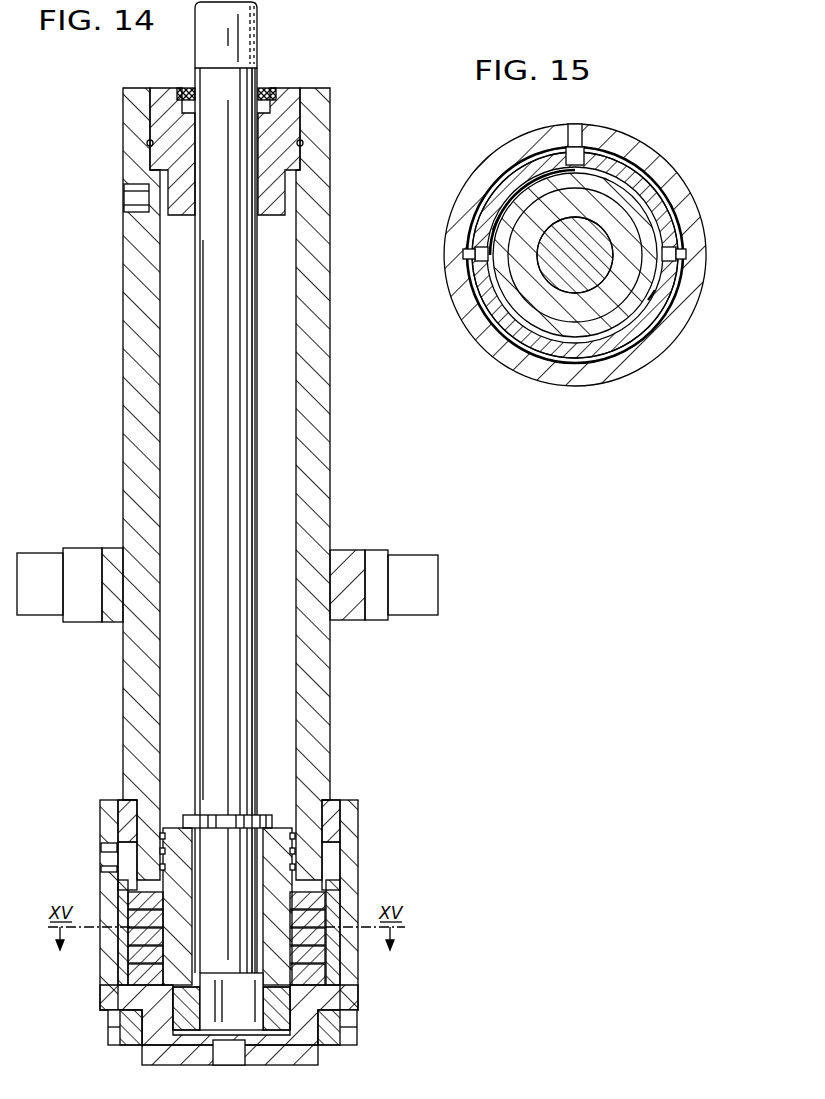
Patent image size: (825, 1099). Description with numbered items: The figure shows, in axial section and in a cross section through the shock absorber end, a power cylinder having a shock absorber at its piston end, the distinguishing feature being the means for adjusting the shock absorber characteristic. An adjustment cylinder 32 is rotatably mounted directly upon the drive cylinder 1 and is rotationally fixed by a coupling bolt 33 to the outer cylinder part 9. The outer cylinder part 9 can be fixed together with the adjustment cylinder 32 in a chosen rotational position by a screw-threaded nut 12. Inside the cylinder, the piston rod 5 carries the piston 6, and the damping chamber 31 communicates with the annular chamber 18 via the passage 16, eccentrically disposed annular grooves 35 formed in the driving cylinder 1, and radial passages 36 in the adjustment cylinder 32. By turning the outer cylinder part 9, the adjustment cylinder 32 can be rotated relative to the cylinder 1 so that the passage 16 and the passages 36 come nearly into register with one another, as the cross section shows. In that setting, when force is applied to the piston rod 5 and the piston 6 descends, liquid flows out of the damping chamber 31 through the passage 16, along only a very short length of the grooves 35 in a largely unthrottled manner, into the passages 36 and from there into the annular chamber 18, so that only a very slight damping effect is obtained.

In FIG. 14, the drive cylinder 1 is at (335, 680).
In FIG. 15, the drive cylinder 1 is at (512, 308).
In FIG. 14, the piston rod 5 is at (236, 36).
In FIG. 14, the piston 6 is at (298, 815).
In FIG. 15, the piston 6 is at (591, 312).
In FIG. 14, the outer cylinder part 9 is at (358, 990).
In FIG. 15, the outer cylinder part 9 is at (547, 373).
In FIG. 14, the screw-threaded nut 12 is at (357, 1036).
In FIG. 14, the passage 16 is at (240, 958).
In FIG. 15, the passage 16 is at (480, 270).
In FIG. 14, the annular chamber 18 is at (336, 850).
In FIG. 15, the annular chamber 18 is at (495, 176).
In FIG. 14, the damping chamber 31 is at (186, 487).
In FIG. 14, the adjustment cylinder 32 is at (330, 895).
In FIG. 14, the coupling bolt 33 is at (101, 882).
In FIG. 15, the coupling bolt 33 is at (590, 141).
In FIG. 14, the eccentrically disposed annular grooves 35 is at (128, 972).
In FIG. 15, the eccentrically disposed annular grooves 35 is at (488, 238).
In FIG. 14, the radial passages 36 is at (326, 950).
In FIG. 15, the radial passages 36 is at (475, 253).